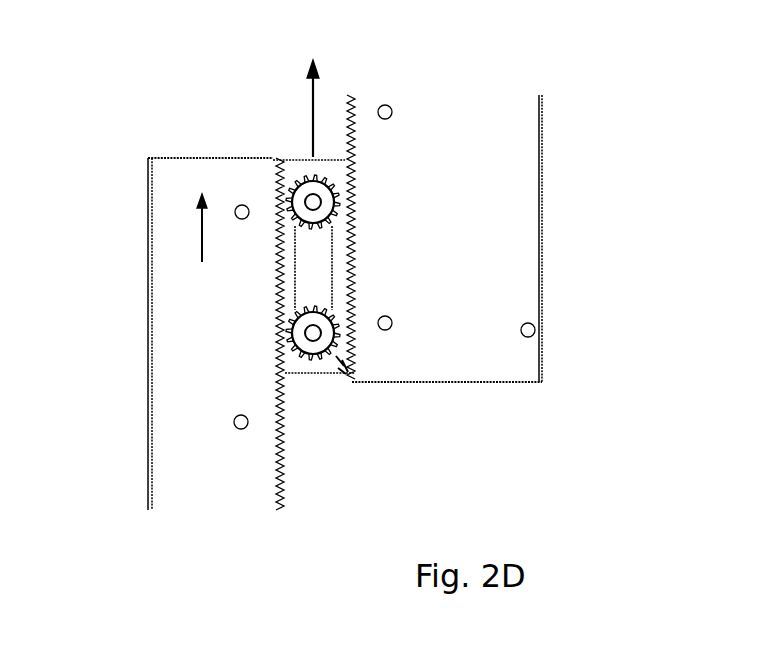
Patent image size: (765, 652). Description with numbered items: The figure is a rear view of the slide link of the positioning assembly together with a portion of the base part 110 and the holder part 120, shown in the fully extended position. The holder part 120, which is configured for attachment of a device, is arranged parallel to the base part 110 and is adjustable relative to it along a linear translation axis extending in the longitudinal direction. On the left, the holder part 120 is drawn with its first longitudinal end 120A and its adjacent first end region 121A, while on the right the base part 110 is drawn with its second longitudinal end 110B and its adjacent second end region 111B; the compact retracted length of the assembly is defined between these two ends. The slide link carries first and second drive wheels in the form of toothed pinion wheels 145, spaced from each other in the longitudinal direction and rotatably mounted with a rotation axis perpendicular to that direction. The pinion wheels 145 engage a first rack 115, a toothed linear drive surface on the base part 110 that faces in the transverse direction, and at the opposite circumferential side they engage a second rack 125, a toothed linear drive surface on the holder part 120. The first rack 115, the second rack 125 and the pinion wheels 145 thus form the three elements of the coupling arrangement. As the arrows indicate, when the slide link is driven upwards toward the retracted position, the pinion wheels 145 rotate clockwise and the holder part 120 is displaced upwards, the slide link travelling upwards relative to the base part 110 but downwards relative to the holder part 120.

The base part 110 is at (465, 236).
The second longitudinal end of the base part 110B is at (516, 394).
The second end region of the base part 111B is at (557, 364).
The first rack 115 is at (355, 257).
The holder part 120 is at (221, 307).
The first longitudinal end of the holder part 120A is at (227, 150).
The first end region of the holder part 121A is at (137, 167).
The second rack 125 is at (273, 473).
The toothed pinion wheels 145 is at (320, 202).